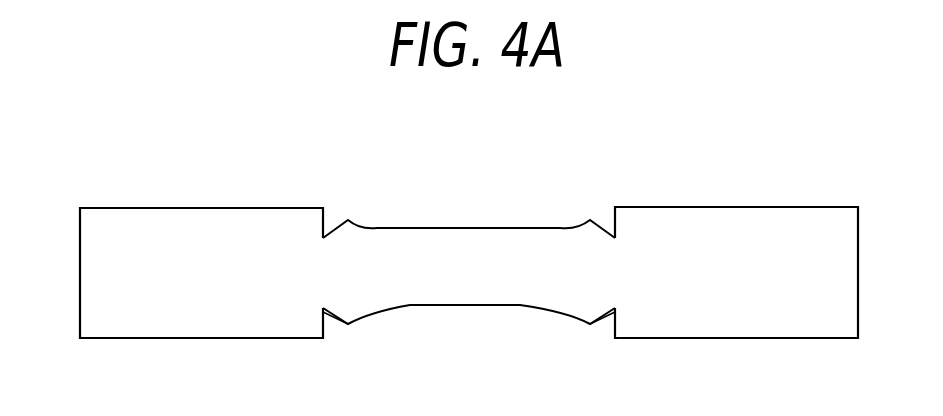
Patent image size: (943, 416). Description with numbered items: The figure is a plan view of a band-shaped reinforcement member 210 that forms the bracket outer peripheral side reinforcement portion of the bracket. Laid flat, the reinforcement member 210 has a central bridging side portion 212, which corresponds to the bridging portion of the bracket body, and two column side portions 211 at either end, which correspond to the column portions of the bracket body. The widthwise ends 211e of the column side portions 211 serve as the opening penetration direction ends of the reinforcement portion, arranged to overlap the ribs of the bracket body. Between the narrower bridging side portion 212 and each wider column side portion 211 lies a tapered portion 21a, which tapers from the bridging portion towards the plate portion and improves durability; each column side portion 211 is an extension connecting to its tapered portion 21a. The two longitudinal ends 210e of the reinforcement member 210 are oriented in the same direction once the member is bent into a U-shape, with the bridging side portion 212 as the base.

The reinforcement member 210 is at (473, 243).
The column side portion 211 is at (155, 242).
The widthwise end 211e is at (220, 208).
The bridging side portion 212 is at (508, 257).
The longitudinal end 210e is at (80, 307).
The tapered portion 21a is at (342, 300).